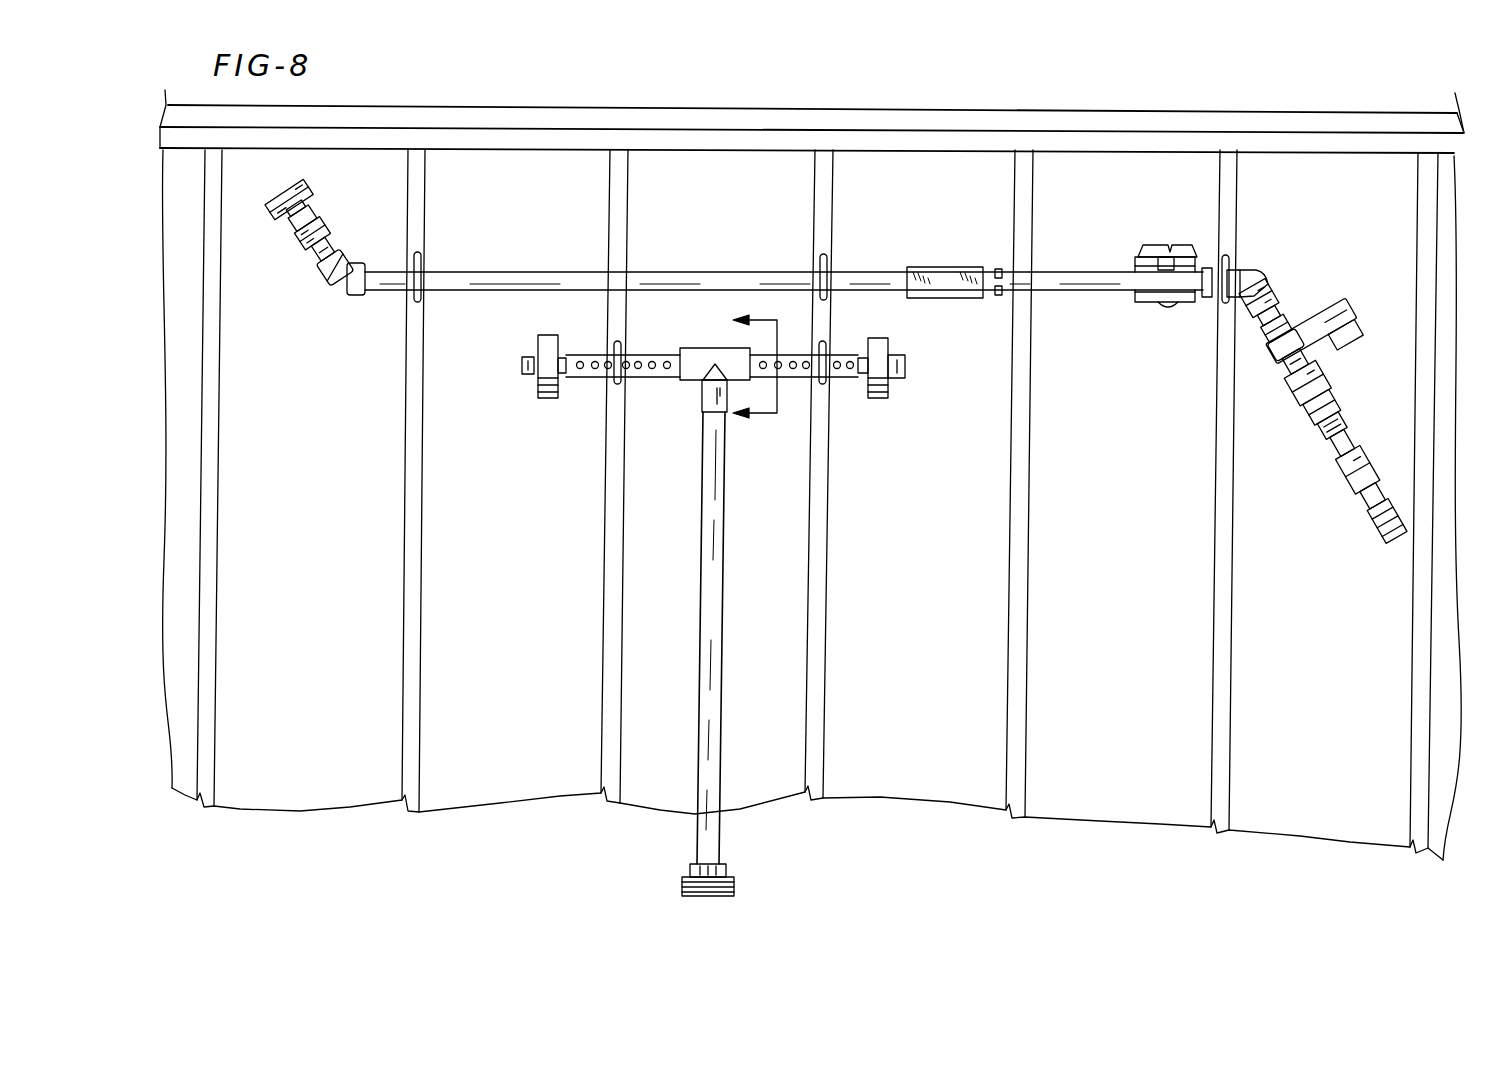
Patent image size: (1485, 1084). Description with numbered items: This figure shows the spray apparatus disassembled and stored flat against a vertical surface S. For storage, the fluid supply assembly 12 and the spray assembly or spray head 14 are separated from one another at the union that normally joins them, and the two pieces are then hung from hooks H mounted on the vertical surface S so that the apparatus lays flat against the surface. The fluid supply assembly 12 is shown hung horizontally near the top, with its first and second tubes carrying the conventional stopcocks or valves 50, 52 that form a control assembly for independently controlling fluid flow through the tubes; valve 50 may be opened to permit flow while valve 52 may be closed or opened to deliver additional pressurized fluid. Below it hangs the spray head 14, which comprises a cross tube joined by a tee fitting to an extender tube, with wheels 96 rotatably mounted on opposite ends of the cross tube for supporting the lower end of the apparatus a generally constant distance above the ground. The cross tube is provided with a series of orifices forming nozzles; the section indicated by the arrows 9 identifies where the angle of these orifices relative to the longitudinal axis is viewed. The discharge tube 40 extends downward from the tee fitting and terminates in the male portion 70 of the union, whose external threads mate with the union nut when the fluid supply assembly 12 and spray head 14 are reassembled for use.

The fluid supply assembly 12 is at (708, 264).
The spray assembly 14 is at (729, 566).
The discharge tube 40 is at (721, 682).
The valve 50 is at (1333, 318).
The valve 52 is at (1157, 212).
The male portion 70 is at (735, 879).
The wheels 96 is at (878, 398).
The section line 9 is at (768, 369).
The hooks H is at (423, 262).
The vertical surface S is at (937, 200).